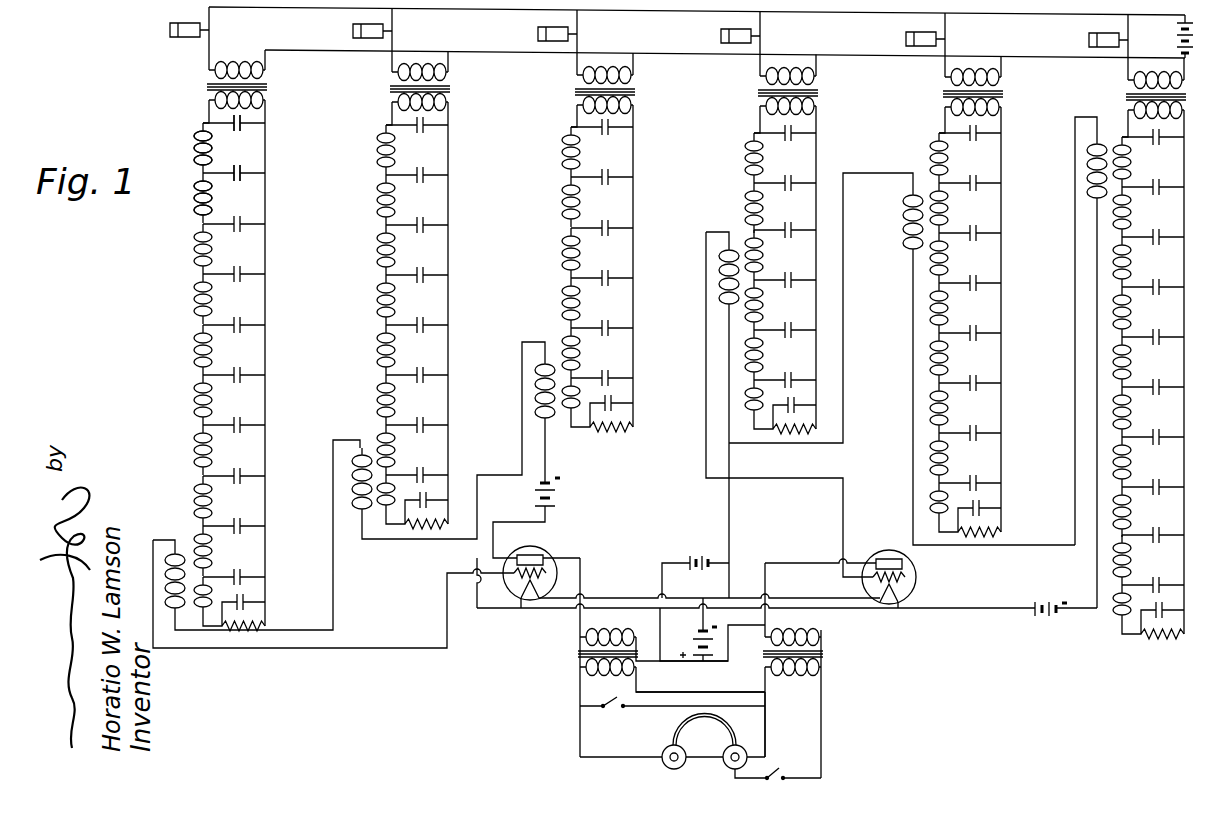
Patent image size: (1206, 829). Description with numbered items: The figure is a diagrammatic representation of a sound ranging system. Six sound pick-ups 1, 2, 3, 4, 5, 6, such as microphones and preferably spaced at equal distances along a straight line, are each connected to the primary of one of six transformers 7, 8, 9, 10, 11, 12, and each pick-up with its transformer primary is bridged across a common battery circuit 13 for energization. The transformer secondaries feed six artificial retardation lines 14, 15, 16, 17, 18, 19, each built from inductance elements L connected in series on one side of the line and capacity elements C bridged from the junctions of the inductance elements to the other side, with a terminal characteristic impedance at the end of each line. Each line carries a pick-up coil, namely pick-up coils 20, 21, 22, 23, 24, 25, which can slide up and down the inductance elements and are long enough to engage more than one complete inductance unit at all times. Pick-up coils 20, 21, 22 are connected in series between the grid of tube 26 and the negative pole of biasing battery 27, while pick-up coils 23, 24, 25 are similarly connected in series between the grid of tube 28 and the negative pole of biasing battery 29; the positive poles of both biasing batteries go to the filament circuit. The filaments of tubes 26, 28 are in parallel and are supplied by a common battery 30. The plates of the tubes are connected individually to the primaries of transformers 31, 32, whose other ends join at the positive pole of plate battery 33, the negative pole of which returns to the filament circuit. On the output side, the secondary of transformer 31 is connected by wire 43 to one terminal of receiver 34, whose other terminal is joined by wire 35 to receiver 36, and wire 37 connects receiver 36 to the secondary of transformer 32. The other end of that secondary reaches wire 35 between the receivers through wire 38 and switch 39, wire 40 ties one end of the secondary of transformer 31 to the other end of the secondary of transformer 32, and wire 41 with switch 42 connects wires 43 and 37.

The sound pick-up 1 is at (180, 38).
The sound pick-up 2 is at (248, 622).
The sound pick-up 3 is at (548, 42).
The sound pick-up 4 is at (731, 44).
The sound pick-up 5 is at (916, 45).
The sound pick-up 6 is at (1100, 48).
The transformer 7 is at (208, 84).
The transformer 8 is at (394, 90).
The transformer 9 is at (577, 92).
The transformer 10 is at (760, 93).
The transformer 11 is at (945, 94).
The transformer 12 is at (1128, 96).
The common battery circuit 13 is at (1043, 16).
The artificial line 14 is at (267, 186).
The artificial line 15 is at (450, 182).
The artificial line 16 is at (635, 183).
The artificial line 17 is at (800, 270).
The artificial line 18 is at (1003, 161).
The artificial line 19 is at (1186, 163).
The inductance element L is at (193, 194).
The capacity element C is at (237, 179).
The pick-up coil 20 is at (175, 547).
The pick-up coil 21 is at (360, 452).
The pick-up coil 22 is at (545, 357).
The pick-up coil 23 is at (729, 243).
The pick-up coil 24 is at (905, 250).
The pick-up coil 25 is at (1088, 196).
The tube 26 is at (511, 597).
The biasing battery 27 is at (556, 494).
The tube 28 is at (905, 598).
The biasing battery 29 is at (1049, 624).
The battery 30 is at (695, 564).
The transformer 31 is at (578, 657).
The transformer 32 is at (823, 654).
The plate battery 33 is at (712, 629).
The receiver 34 is at (669, 768).
The wire 35 is at (700, 757).
The receiver 36 is at (741, 746).
The wire 37 is at (767, 717).
The wire 38 is at (823, 719).
The switch 39 is at (775, 770).
The wire 40 is at (664, 690).
The wire 41 is at (657, 708).
The switch 42 is at (612, 705).
The wire 43 is at (579, 741).